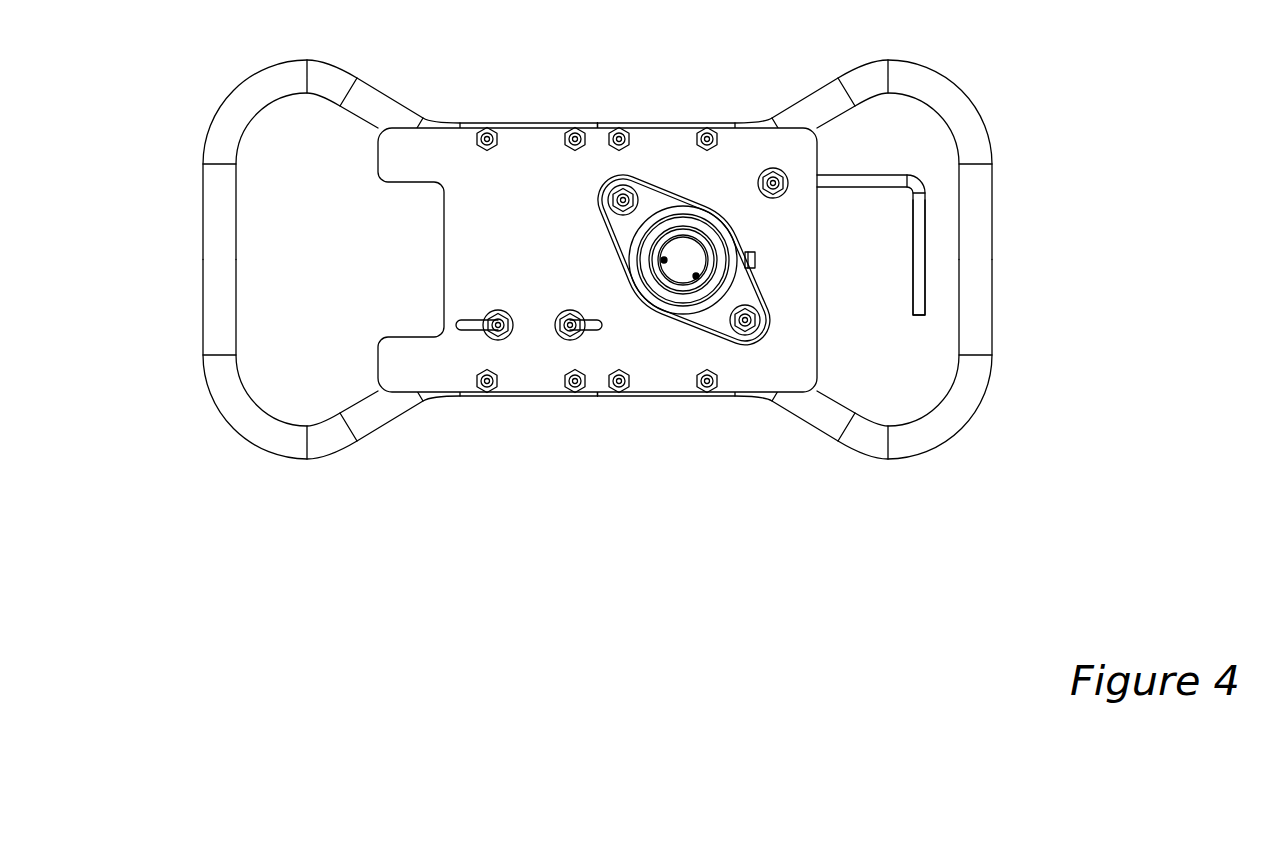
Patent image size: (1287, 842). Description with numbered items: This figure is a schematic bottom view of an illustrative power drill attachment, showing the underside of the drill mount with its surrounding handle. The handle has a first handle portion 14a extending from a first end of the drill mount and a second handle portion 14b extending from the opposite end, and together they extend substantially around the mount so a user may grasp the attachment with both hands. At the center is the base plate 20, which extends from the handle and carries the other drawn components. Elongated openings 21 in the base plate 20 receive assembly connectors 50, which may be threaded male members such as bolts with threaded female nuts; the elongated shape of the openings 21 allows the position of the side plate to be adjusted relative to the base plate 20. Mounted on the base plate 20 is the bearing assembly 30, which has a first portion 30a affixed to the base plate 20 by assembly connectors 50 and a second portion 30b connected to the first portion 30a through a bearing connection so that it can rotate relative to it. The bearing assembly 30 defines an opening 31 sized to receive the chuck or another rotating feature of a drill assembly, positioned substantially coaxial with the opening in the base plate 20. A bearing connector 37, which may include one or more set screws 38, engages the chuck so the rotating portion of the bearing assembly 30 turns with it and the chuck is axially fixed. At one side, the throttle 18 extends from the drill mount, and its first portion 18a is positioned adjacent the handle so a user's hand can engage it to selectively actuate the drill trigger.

The first handle portion 14a is at (953, 85).
The second handle portion 14b is at (243, 86).
The throttle 18 is at (875, 175).
The first portion of the throttle 18a is at (899, 280).
The base plate 20 is at (460, 221).
The opening in the base plate 21 is at (472, 332).
The bearing assembly 30 is at (673, 372).
The first portion of the bearing assembly 30a is at (685, 207).
The second portion of the bearing assembly 30b is at (713, 250).
The opening 31 is at (692, 250).
The bearing connector 37 is at (663, 260).
The set screws 38 is at (681, 271).
The assembly connectors 50 is at (488, 129).